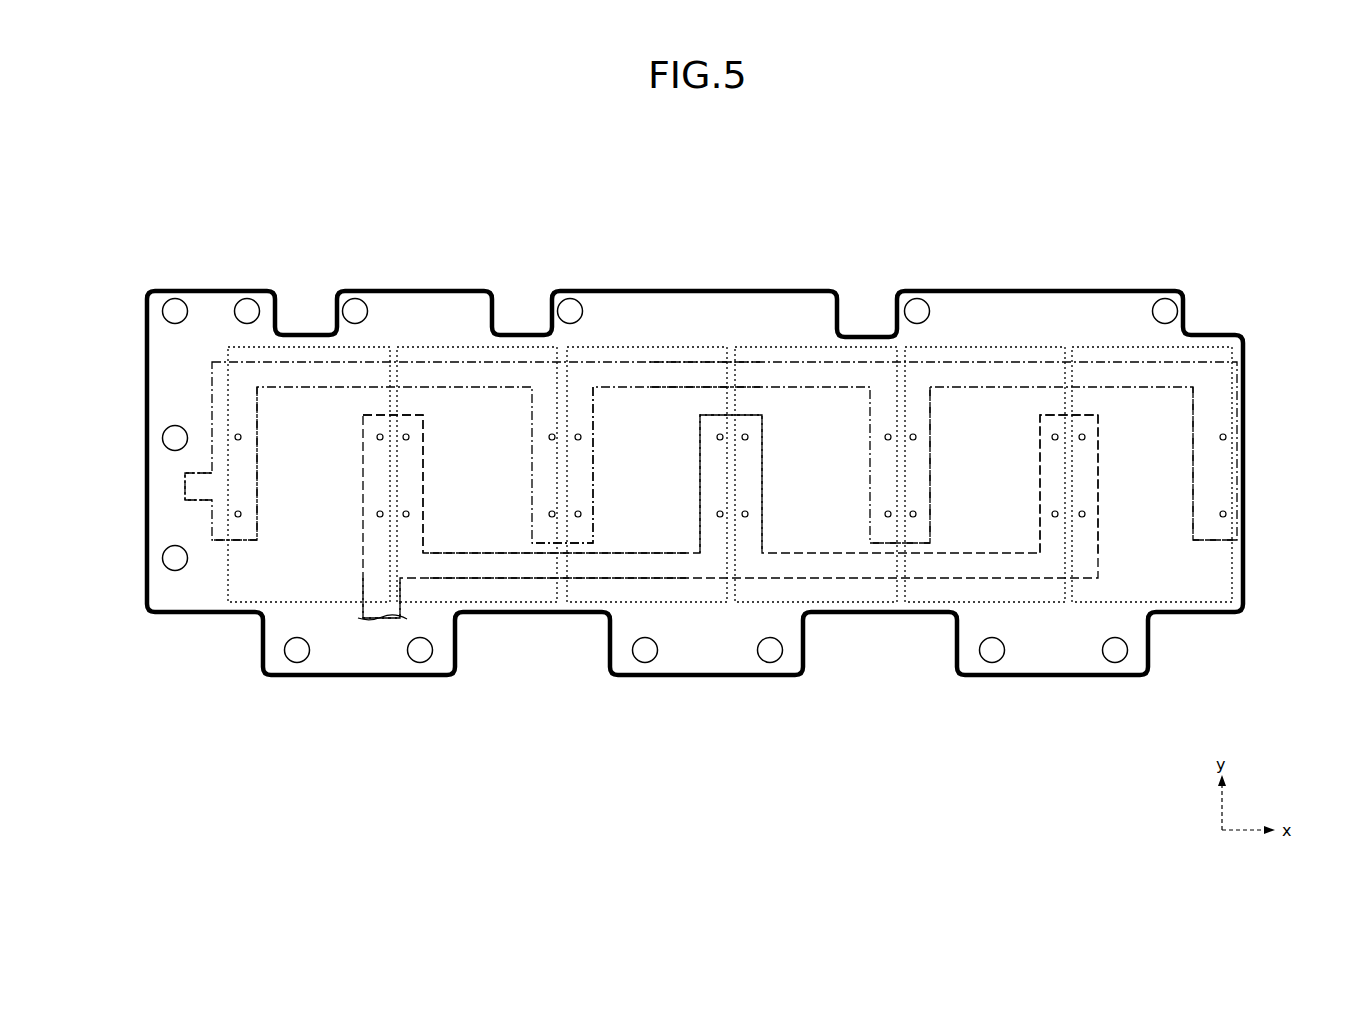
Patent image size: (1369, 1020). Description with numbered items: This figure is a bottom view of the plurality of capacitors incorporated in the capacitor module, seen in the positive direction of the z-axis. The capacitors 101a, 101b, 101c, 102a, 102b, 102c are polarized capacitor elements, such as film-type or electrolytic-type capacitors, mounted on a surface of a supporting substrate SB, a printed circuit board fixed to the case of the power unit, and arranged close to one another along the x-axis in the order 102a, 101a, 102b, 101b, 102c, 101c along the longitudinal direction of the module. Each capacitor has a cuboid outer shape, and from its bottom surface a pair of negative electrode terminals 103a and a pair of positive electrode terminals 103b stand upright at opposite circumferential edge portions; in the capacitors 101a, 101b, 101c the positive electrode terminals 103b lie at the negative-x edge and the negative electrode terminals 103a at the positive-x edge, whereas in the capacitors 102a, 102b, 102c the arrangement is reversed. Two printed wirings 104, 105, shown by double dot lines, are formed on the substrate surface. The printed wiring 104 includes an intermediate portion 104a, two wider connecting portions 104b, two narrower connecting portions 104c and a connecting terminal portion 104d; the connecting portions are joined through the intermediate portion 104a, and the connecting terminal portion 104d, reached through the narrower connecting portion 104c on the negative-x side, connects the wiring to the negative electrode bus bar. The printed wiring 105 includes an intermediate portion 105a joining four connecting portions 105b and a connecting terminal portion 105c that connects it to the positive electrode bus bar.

The supporting substrate SB is at (200, 312).
The capacitor 101a is at (510, 362).
The capacitor 101b is at (787, 345).
The capacitor 101c is at (1215, 350).
The capacitor 102a is at (310, 345).
The capacitor 102b is at (630, 345).
The capacitor 102c is at (1005, 345).
The negative electrode terminal 103a is at (241, 437).
The positive electrode terminal 103b is at (377, 514).
The printed wiring 104 is at (845, 378).
The intermediate portion 104a is at (695, 375).
The wider connecting portion 104b is at (590, 421).
The narrower connecting portion 104c is at (245, 422).
The connecting terminal portion 104d is at (185, 485).
The printed wiring 105 is at (860, 565).
The intermediate portion 105a is at (585, 570).
The connecting portion 105b is at (426, 417).
The connecting terminal portion 105c is at (387, 620).